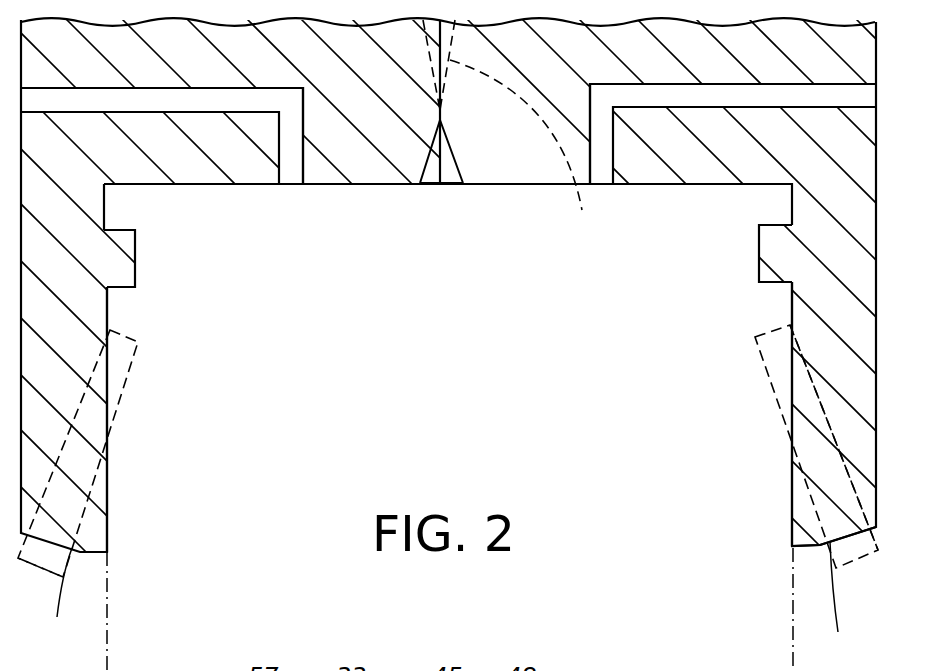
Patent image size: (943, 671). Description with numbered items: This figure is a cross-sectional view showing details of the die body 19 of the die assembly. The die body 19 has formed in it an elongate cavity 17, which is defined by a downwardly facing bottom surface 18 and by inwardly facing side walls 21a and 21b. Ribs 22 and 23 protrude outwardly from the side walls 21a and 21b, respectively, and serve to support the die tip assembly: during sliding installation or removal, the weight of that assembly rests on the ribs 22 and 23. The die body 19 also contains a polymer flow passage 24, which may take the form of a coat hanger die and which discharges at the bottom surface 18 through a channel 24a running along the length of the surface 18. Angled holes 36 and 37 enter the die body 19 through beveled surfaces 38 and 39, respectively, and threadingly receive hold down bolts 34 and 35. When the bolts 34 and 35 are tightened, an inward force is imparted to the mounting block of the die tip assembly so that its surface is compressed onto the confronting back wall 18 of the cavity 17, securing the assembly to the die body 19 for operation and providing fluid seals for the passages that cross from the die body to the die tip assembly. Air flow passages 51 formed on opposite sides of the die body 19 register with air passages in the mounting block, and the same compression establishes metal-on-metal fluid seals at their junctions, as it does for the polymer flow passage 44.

The elongate cavity 17 is at (444, 293).
The bottom surface 18 is at (360, 184).
The die body 19 is at (782, 539).
The side wall 21a is at (791, 305).
The side wall 21b is at (107, 305).
The rib 22 is at (758, 268).
The rib 23 is at (135, 258).
The polymer flow passage 24 is at (458, 163).
The channel 24a is at (443, 184).
The hold down bolt 34 is at (772, 382).
The hold down bolt 35 is at (132, 372).
The angled hole 36 is at (842, 468).
The angled hole 37 is at (50, 498).
The beveled surface 38 is at (838, 603).
The beveled surface 39 is at (57, 598).
The polymer flow passage 44 is at (510, 123).
The air flow passage 51 is at (222, 98).